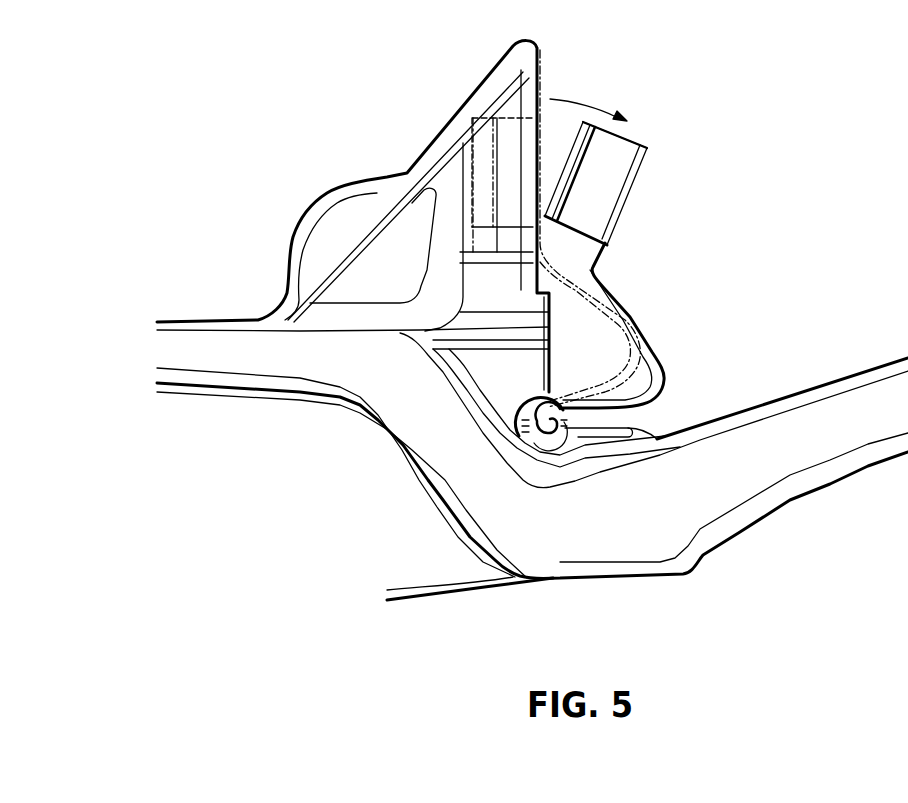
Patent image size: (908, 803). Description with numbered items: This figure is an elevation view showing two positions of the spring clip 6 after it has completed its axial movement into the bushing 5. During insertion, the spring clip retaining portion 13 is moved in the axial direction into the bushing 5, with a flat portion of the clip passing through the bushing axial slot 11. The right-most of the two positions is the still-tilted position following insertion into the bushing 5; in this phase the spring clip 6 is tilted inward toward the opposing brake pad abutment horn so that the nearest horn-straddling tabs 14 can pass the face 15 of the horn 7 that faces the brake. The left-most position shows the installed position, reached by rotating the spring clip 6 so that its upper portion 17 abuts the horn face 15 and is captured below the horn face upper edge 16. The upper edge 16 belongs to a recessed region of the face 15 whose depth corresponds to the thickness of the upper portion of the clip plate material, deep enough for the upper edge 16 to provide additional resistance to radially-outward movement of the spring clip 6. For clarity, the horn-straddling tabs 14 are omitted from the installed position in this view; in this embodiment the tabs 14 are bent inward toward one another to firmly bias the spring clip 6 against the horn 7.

The bushing 5 is at (523, 430).
The spring clip 6 is at (612, 291).
The horn 7 is at (513, 44).
The bushing axial slot 11 is at (567, 413).
The spring clip retaining portion 13 is at (547, 433).
The horn-straddling tabs 14 is at (628, 138).
The face of the horn 15 is at (530, 163).
The upper edge 16 is at (530, 113).
The upper portion 17 is at (538, 133).